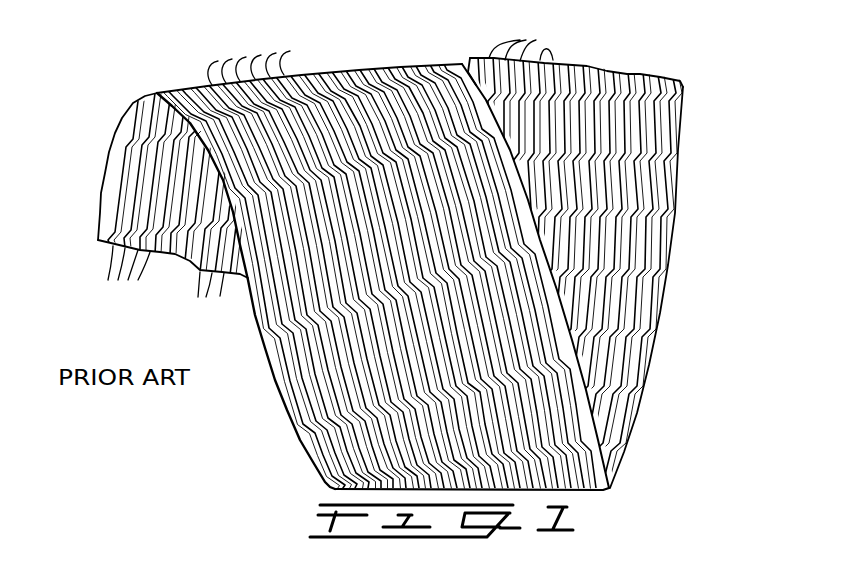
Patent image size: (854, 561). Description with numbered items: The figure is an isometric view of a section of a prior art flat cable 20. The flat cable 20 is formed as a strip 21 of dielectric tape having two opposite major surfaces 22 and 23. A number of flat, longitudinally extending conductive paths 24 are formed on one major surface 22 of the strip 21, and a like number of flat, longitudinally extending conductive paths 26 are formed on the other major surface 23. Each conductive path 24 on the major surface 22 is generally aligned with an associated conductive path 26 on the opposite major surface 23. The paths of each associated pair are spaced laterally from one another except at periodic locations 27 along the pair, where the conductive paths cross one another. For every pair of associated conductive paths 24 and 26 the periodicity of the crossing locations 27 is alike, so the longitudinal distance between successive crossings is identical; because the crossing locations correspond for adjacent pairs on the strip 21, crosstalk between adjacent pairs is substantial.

The flat cable 20 is at (688, 388).
The strip 21 is at (645, 343).
The major surface 22 is at (437, 72).
The major surface 23 is at (122, 152).
The conductive path 24 is at (283, 75).
The conductive path 26 is at (329, 161).
The crossing location 27 is at (656, 213).